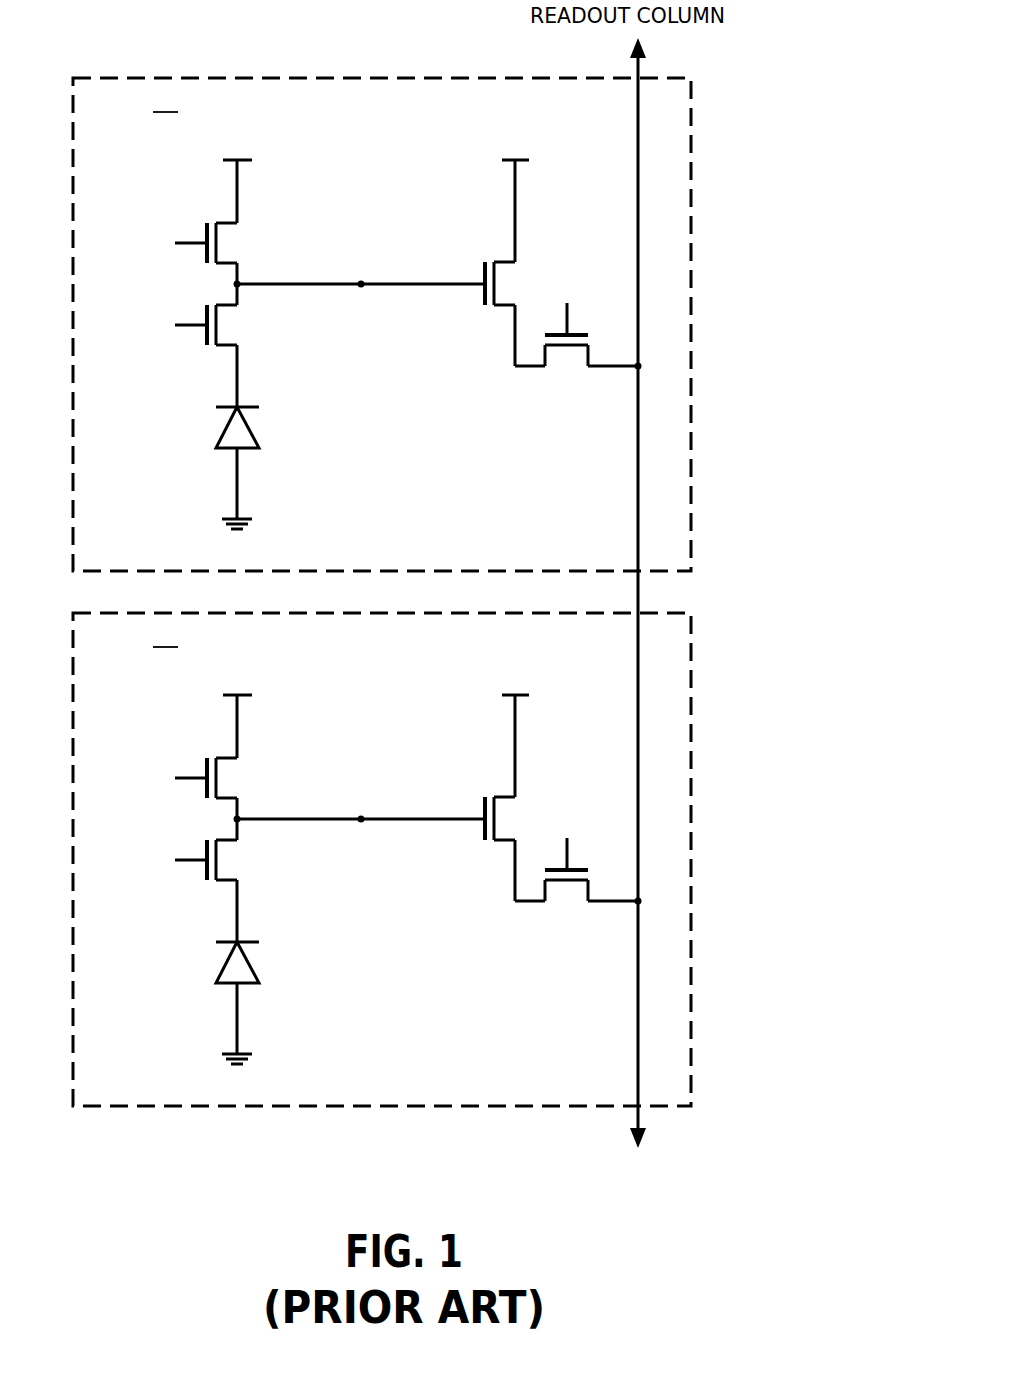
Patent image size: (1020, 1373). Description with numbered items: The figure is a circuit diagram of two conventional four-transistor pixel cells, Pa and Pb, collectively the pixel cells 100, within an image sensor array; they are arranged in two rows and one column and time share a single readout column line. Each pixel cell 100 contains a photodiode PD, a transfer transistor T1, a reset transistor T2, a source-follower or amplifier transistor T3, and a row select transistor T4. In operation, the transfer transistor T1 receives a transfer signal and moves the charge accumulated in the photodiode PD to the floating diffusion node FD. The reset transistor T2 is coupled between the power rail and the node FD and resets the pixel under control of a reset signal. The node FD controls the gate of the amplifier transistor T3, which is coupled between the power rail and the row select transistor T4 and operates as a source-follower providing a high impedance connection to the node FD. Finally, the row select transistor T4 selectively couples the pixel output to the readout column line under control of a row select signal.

The pixel cells 100 is at (690, 220).
The transfer transistor T1 is at (190, 592).
The reset transistor T2 is at (186, 510).
The source-follower transistor T3 is at (486, 540).
The row select transistor T4 is at (578, 593).
The photodiode PD is at (218, 696).
The floating diffusion node FD is at (360, 536).